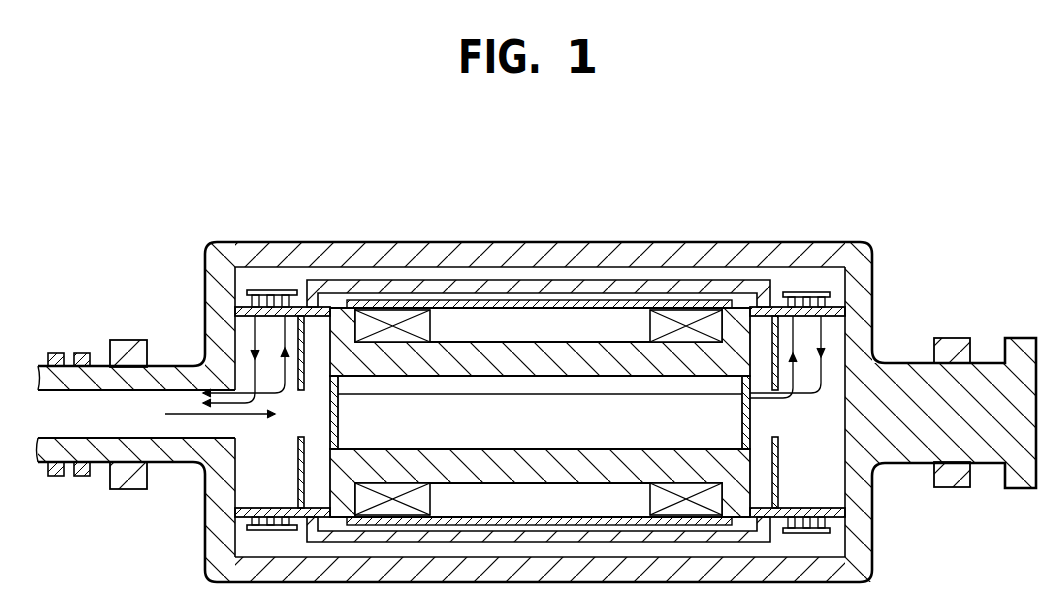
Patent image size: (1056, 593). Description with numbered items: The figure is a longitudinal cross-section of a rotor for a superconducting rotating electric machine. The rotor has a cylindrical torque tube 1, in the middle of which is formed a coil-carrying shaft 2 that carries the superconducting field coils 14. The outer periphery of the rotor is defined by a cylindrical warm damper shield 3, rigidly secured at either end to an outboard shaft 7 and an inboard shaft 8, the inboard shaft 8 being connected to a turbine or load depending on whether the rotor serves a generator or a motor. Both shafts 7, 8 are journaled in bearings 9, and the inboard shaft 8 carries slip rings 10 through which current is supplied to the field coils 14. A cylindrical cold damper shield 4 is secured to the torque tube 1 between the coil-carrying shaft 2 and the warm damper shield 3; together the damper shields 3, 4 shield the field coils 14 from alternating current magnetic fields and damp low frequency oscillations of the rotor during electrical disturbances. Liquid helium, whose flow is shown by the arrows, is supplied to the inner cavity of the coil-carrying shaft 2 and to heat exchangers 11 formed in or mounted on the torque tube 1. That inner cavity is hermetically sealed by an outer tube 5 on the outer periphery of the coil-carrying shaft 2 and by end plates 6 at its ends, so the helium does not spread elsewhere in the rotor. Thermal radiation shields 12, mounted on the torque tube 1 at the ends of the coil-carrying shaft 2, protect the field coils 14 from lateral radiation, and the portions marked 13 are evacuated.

The torque tube 1 is at (759, 507).
The coil-carrying shaft 2 is at (525, 470).
The warm damper shield 3 is at (521, 253).
The cold damper shield 4 is at (637, 290).
The outer tube 5 is at (463, 516).
The end plates 6 is at (338, 418).
The outboard shaft 7 is at (900, 448).
The inboard shaft 8 is at (185, 464).
The bearings 9 is at (133, 490).
The slip rings 10 is at (82, 477).
The heat exchangers 11 is at (816, 507).
The thermal radiation shields 12 is at (298, 468).
The evacuated portions 13 is at (445, 298).
The superconducting field coils 14 is at (407, 481).